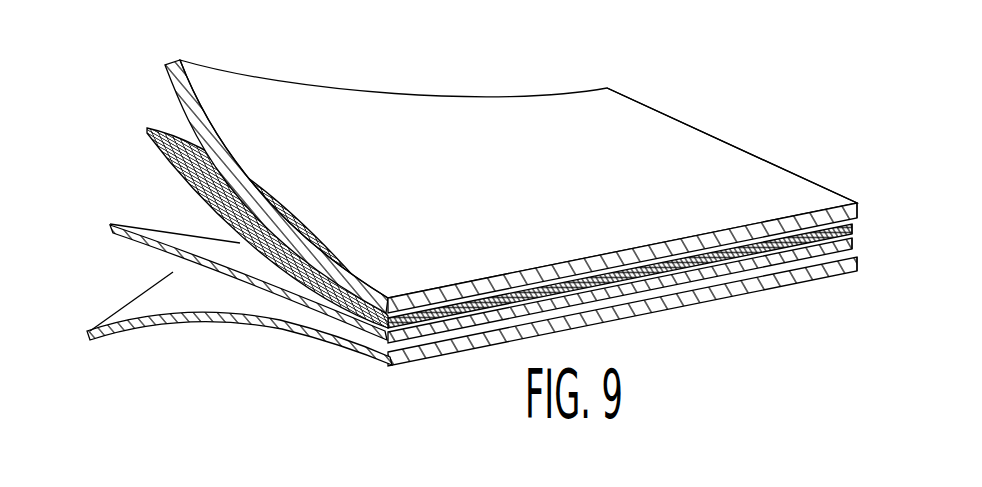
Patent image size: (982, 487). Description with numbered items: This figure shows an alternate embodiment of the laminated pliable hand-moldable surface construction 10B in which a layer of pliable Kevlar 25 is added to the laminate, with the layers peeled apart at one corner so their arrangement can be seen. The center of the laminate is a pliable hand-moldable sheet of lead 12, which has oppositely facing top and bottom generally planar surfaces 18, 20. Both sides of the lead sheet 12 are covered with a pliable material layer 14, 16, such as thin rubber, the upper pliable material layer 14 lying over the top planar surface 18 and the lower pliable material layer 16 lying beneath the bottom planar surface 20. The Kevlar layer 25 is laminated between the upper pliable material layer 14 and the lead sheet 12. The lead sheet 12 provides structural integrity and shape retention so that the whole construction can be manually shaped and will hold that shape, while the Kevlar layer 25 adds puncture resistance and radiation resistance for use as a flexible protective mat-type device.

The surface construction 10B is at (752, 155).
The pliable material layer 14 is at (462, 144).
The layer of pliable Kevlar 25 is at (143, 128).
The generally planar surface 18 is at (200, 253).
The sheet of lead 12 is at (105, 228).
The generally planar surface 20 is at (123, 245).
The pliable material layer 16 is at (236, 330).